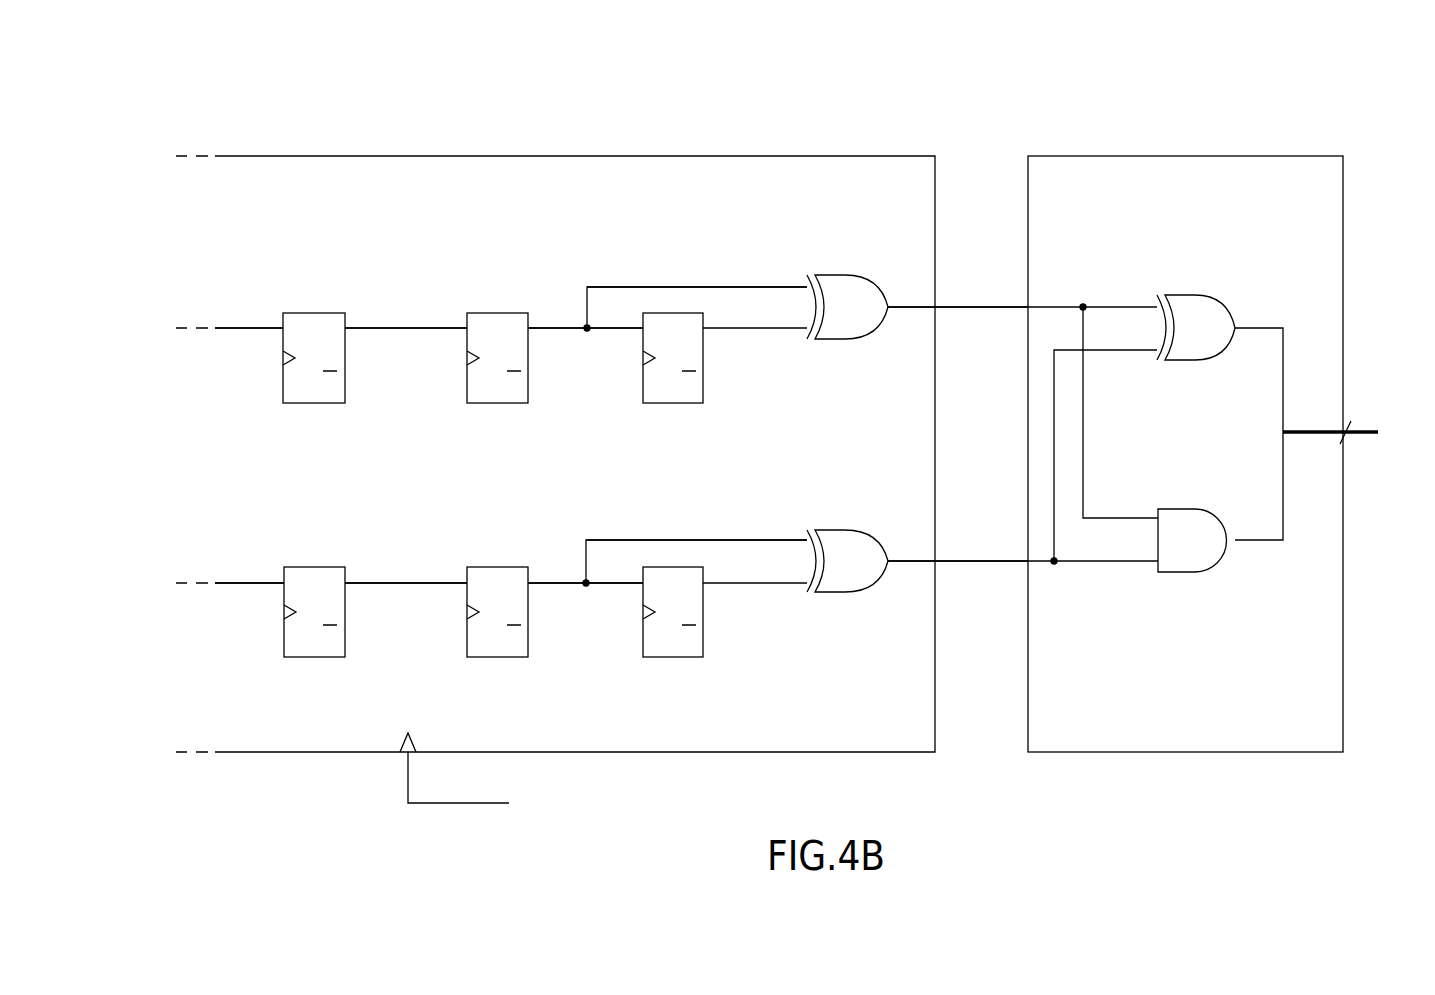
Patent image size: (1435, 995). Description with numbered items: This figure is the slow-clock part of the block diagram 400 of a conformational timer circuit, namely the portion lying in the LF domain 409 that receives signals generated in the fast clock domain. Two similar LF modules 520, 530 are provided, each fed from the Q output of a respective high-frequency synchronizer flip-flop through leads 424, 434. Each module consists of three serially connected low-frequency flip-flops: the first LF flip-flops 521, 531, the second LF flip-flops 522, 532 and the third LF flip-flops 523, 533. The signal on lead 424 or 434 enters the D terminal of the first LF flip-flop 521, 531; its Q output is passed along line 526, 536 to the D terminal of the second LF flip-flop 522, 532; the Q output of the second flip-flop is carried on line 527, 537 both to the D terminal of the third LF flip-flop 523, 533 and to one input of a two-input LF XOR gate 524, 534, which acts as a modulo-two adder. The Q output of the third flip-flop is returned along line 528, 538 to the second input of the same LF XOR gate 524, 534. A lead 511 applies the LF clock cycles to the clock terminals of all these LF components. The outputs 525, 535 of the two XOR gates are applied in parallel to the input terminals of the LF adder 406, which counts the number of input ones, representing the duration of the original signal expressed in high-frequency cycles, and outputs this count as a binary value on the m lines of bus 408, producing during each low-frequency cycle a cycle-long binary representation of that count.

The block diagram 400 is at (1268, 85).
The LF adder 406 is at (1160, 156).
The bus 408 is at (1353, 424).
The LF domain 409 is at (565, 156).
The lead 424 is at (240, 335).
The lead 434 is at (240, 590).
The lead 511 is at (408, 781).
The LF module 520 is at (378, 264).
The first LF flip-flop 521 is at (315, 403).
The second LF flip-flop 522 is at (495, 403).
The third LF flip-flop 523 is at (672, 403).
The LF XOR gate 524 is at (873, 334).
The output 525 is at (978, 312).
The tg_1clkd signal line 526 is at (413, 334).
The signal line to third flip-flop 527 is at (567, 334).
The tg_1clkd2 signal line 528 is at (754, 286).
The LF module 530 is at (378, 517).
The first LF flip-flop 531 is at (315, 657).
The second LF flip-flop 532 is at (495, 657).
The third LF flip-flop 533 is at (672, 657).
The LF XOR gate 534 is at (873, 588).
The output 535 is at (978, 566).
The tg_2clkd signal line 536 is at (413, 589).
The signal line to third flip-flop of second chain 537 is at (567, 589).
The tg_2clkd2 signal line 538 is at (754, 539).